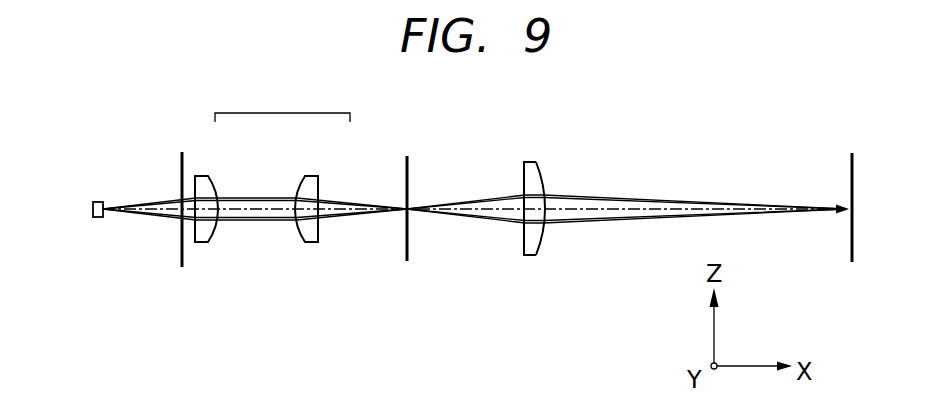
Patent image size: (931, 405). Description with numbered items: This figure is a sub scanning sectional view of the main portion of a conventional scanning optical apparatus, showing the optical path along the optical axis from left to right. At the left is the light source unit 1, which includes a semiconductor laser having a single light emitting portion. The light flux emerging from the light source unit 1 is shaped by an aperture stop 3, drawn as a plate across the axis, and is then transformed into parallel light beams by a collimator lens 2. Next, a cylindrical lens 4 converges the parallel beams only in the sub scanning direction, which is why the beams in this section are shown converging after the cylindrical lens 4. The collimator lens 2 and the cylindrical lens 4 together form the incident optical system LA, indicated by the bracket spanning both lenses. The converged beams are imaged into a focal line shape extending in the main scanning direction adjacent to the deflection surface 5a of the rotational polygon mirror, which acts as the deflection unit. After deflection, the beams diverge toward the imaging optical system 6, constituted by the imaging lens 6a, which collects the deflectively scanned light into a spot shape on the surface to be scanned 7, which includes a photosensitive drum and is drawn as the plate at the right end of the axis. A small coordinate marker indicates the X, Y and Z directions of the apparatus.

The light source unit 1 is at (98, 200).
The collimator lens 2 is at (205, 176).
The aperture stop 3 is at (181, 153).
The cylindrical lens 4 is at (308, 176).
The incident optical system LA is at (272, 164).
The deflection surface 5a is at (409, 162).
The imaging optical system 6 is at (531, 208).
The imaging lens 6a is at (530, 256).
The surface to be scanned 7 is at (851, 160).